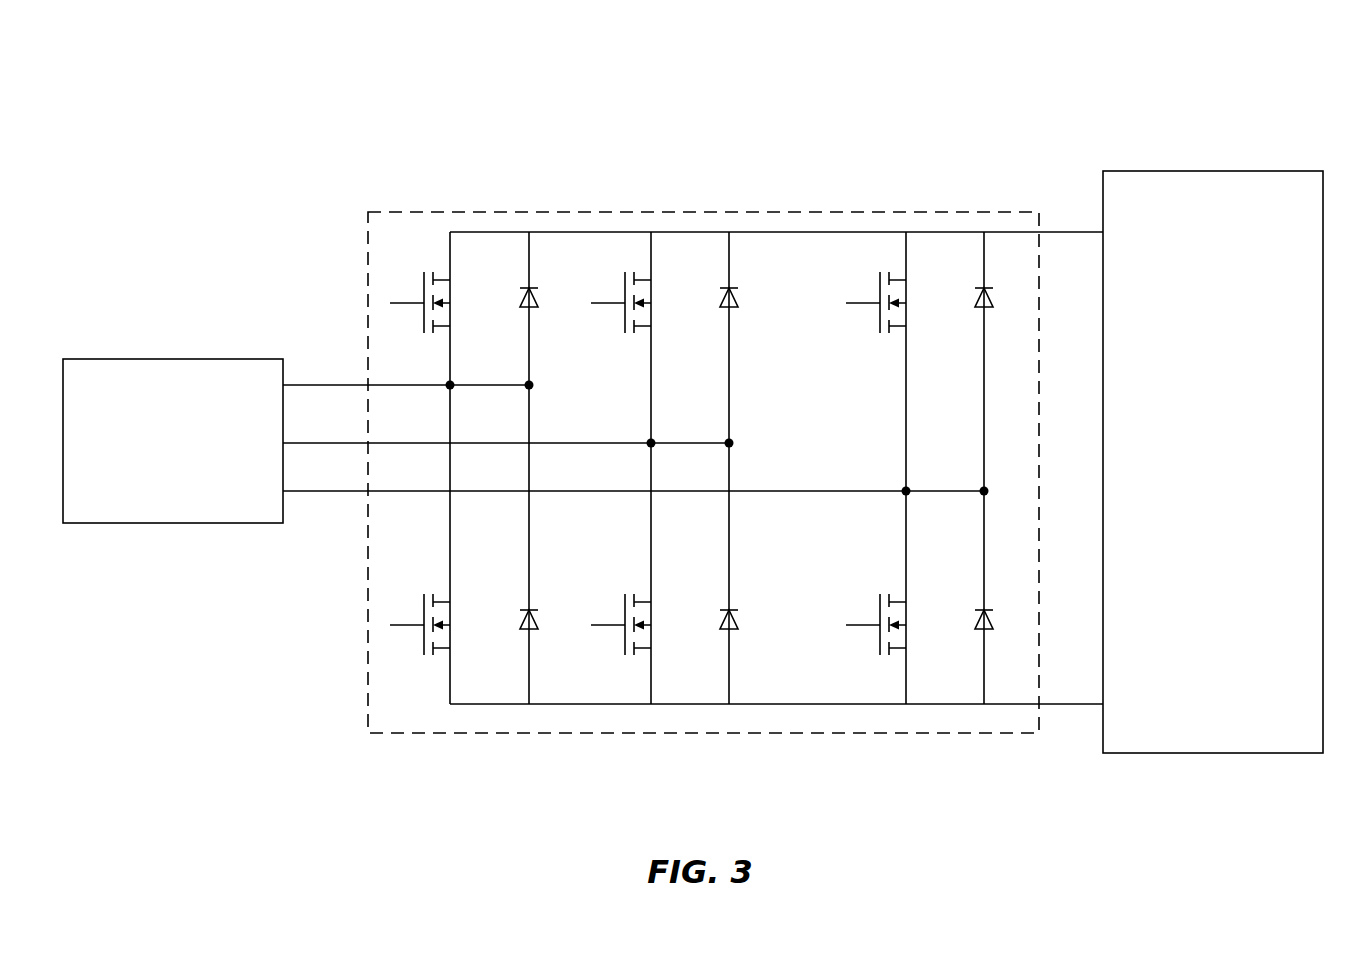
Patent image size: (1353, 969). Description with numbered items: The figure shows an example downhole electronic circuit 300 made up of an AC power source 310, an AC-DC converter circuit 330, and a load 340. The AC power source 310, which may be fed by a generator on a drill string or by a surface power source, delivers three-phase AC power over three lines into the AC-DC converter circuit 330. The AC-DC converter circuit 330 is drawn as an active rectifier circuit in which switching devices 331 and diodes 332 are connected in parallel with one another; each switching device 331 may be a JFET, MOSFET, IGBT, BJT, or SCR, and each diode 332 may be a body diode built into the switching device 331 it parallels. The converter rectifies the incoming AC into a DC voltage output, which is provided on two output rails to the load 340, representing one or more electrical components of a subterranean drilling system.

The downhole electronic circuit 300 is at (1240, 79).
The AC power source 310 is at (173, 441).
The AC-DC converter circuit 330 is at (927, 209).
The switching device 331 is at (411, 291).
The diode 332 is at (515, 281).
The load 340 is at (1213, 462).